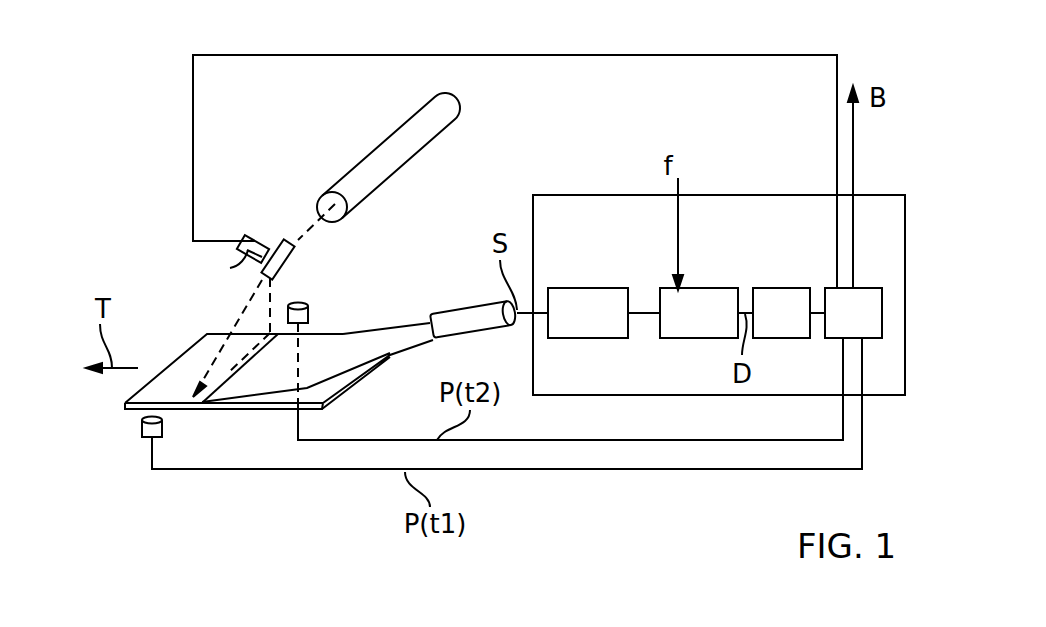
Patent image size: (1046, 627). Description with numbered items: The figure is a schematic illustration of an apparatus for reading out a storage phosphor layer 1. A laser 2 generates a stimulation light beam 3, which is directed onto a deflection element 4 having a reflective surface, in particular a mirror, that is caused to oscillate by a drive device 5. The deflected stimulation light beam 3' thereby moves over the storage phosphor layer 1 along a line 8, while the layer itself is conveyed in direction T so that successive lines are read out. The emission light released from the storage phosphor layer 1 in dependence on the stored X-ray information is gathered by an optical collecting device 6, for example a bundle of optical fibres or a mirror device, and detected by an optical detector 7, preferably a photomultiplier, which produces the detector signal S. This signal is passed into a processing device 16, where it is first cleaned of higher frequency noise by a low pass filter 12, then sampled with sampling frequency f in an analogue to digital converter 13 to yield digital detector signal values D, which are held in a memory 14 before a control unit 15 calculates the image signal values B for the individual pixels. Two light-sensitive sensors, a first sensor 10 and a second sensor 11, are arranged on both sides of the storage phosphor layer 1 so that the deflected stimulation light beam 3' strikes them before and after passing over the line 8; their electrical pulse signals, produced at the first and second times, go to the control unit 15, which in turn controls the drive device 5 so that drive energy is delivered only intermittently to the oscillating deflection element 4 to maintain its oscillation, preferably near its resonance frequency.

The storage phosphor layer 1 is at (125, 405).
The laser 2 is at (378, 155).
The stimulation light beam 3 is at (281, 220).
The deflected stimulation light beam 3' is at (227, 338).
The deflection element 4 is at (277, 244).
The drive device 5 is at (227, 267).
The optical collecting device 6 is at (345, 332).
The optical detector 7 is at (466, 312).
The line 8 is at (218, 366).
The first sensor 10 is at (141, 430).
The second sensor 11 is at (302, 302).
The low pass filter 12 is at (570, 290).
The analogue to digital converter 13 is at (694, 290).
The memory 14 is at (770, 290).
The control unit 15 is at (865, 290).
The processing device 16 is at (563, 198).